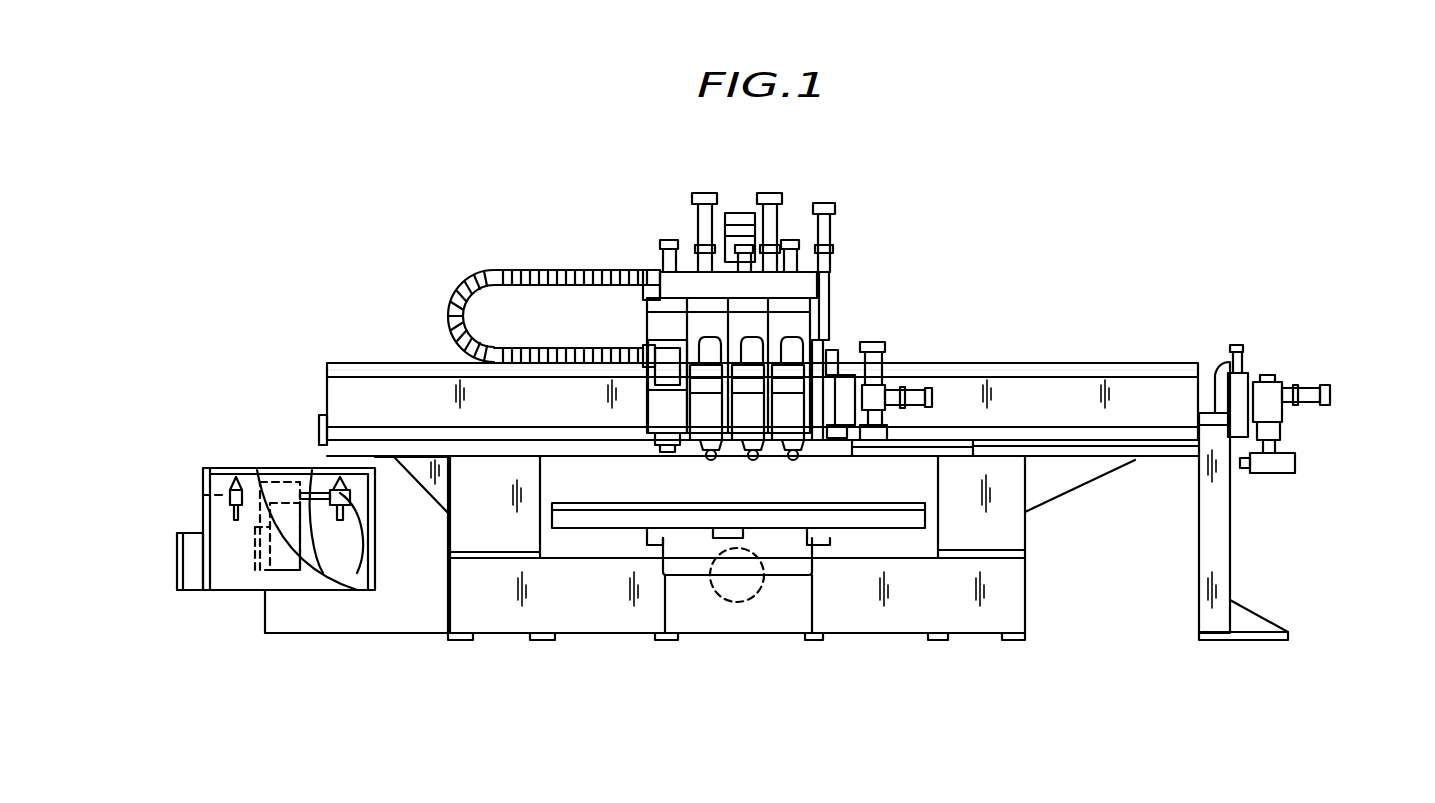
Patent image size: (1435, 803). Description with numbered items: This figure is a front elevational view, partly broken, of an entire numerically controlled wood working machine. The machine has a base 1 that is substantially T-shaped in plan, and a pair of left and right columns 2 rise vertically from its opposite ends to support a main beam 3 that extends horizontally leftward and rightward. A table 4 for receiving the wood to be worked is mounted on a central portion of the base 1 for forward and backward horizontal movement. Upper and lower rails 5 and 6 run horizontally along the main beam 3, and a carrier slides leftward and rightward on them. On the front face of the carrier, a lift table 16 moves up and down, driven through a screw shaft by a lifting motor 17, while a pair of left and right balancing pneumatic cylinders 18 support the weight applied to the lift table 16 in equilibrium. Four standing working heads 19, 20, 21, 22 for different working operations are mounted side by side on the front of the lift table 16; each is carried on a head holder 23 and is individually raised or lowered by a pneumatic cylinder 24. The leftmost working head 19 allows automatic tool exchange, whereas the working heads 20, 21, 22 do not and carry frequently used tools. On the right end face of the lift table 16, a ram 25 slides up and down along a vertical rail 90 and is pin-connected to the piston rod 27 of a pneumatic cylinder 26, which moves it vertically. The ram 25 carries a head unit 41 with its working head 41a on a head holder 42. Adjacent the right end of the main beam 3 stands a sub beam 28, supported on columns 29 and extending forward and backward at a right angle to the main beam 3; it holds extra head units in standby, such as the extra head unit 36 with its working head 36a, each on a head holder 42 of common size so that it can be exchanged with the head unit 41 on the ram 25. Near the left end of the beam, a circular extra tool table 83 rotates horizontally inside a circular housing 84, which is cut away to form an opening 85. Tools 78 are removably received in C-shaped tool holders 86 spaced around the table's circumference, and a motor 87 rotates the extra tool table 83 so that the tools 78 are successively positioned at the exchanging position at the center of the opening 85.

The base 1 is at (912, 638).
The columns 2 is at (518, 515).
The main beam 3 is at (1076, 390).
The table 4 is at (597, 522).
The upper rail 5 is at (1125, 372).
The lower rail 6 is at (1123, 432).
The lift table 16 is at (690, 273).
The lifting motor 17 is at (737, 220).
The balancing pneumatic cylinders 18 is at (698, 267).
The working head 19 is at (673, 422).
The working head 20 is at (718, 422).
The working head 21 is at (750, 422).
The working head 22 is at (787, 420).
The head holders 23 is at (705, 320).
The pneumatic cylinders 24 is at (668, 284).
The ram 25 is at (845, 378).
The pneumatic cylinder 26 is at (825, 237).
The piston rod 27 is at (828, 320).
The sub beam 28 is at (1213, 375).
The columns 29 is at (1210, 575).
The extra head unit 36 is at (1280, 383).
The working head 36a is at (1292, 428).
The head unit 41 is at (886, 387).
The working head 41a is at (892, 400).
The head holder 42 is at (1240, 370).
The tool 78 is at (203, 468).
The extra tool table 83 is at (317, 492).
The housing 84 is at (247, 580).
The opening 85 is at (372, 505).
The tool holders 86 is at (228, 497).
The motor 87 is at (262, 548).
The vertical rail 90 is at (830, 345).